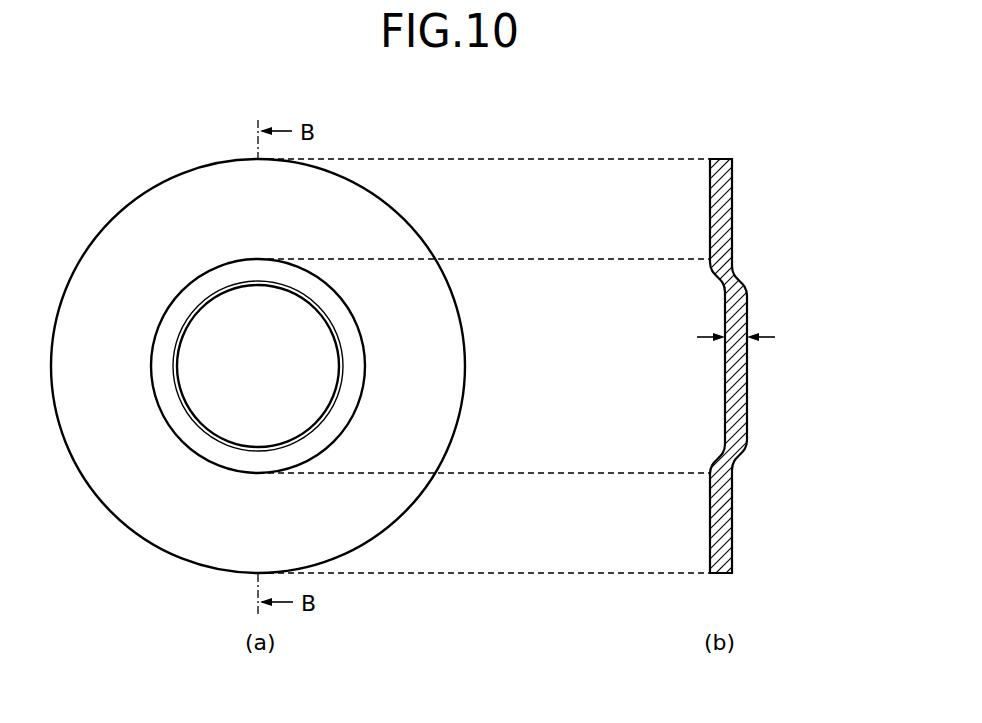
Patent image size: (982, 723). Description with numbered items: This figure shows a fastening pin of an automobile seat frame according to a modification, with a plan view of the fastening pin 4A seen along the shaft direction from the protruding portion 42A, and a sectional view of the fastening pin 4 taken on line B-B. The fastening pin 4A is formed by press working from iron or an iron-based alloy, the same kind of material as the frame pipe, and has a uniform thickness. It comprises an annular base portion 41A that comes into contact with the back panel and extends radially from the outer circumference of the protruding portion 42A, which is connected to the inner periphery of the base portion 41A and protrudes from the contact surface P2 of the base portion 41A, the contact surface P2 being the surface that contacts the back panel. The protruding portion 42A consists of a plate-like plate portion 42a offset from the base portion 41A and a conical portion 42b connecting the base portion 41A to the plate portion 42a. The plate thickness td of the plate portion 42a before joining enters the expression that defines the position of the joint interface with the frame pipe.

The fastening pin 4 is at (722, 150).
The fastening pin 4A is at (193, 158).
The base portion 41A is at (124, 232).
The protruding portion 42A is at (212, 388).
The plate portion 42a is at (317, 372).
The conical portion 42b is at (350, 335).
The contact surface P2 is at (718, 224).
The plate thickness of the plate portion td is at (737, 341).